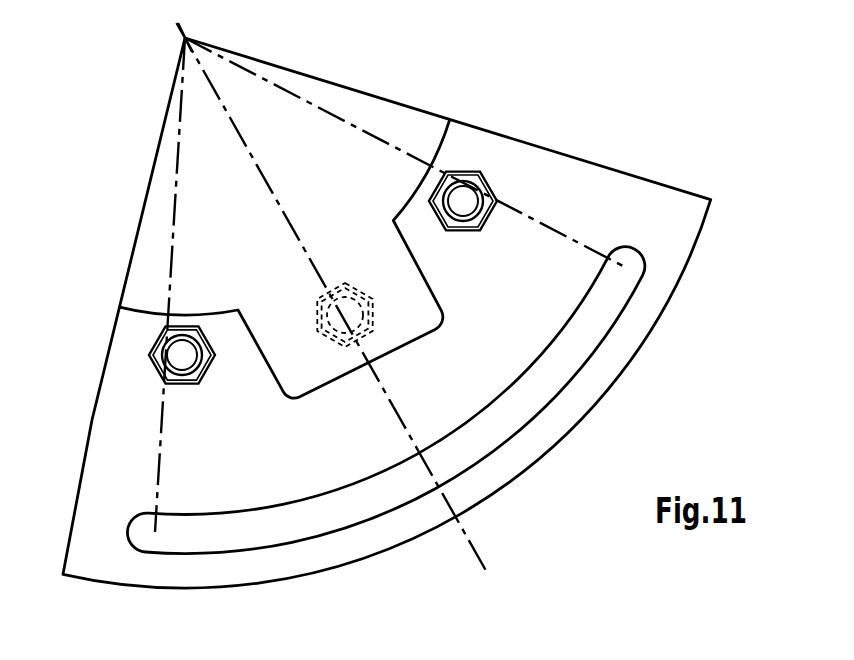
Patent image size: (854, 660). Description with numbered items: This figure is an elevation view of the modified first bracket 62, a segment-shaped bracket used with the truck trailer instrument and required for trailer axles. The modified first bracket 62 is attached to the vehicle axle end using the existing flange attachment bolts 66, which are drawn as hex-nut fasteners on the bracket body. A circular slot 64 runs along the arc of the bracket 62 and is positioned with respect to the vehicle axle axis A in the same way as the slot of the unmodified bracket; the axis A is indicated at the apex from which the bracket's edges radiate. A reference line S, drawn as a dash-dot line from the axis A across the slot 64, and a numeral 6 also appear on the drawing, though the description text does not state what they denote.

The mounting plate assembly 6 is at (127, 214).
The modified first bracket 62 is at (506, 136).
The circular slot 64 is at (325, 513).
The flange attachment bolts 66 is at (153, 337).
The vehicle axle axis A is at (183, 40).
The reference line S is at (466, 532).